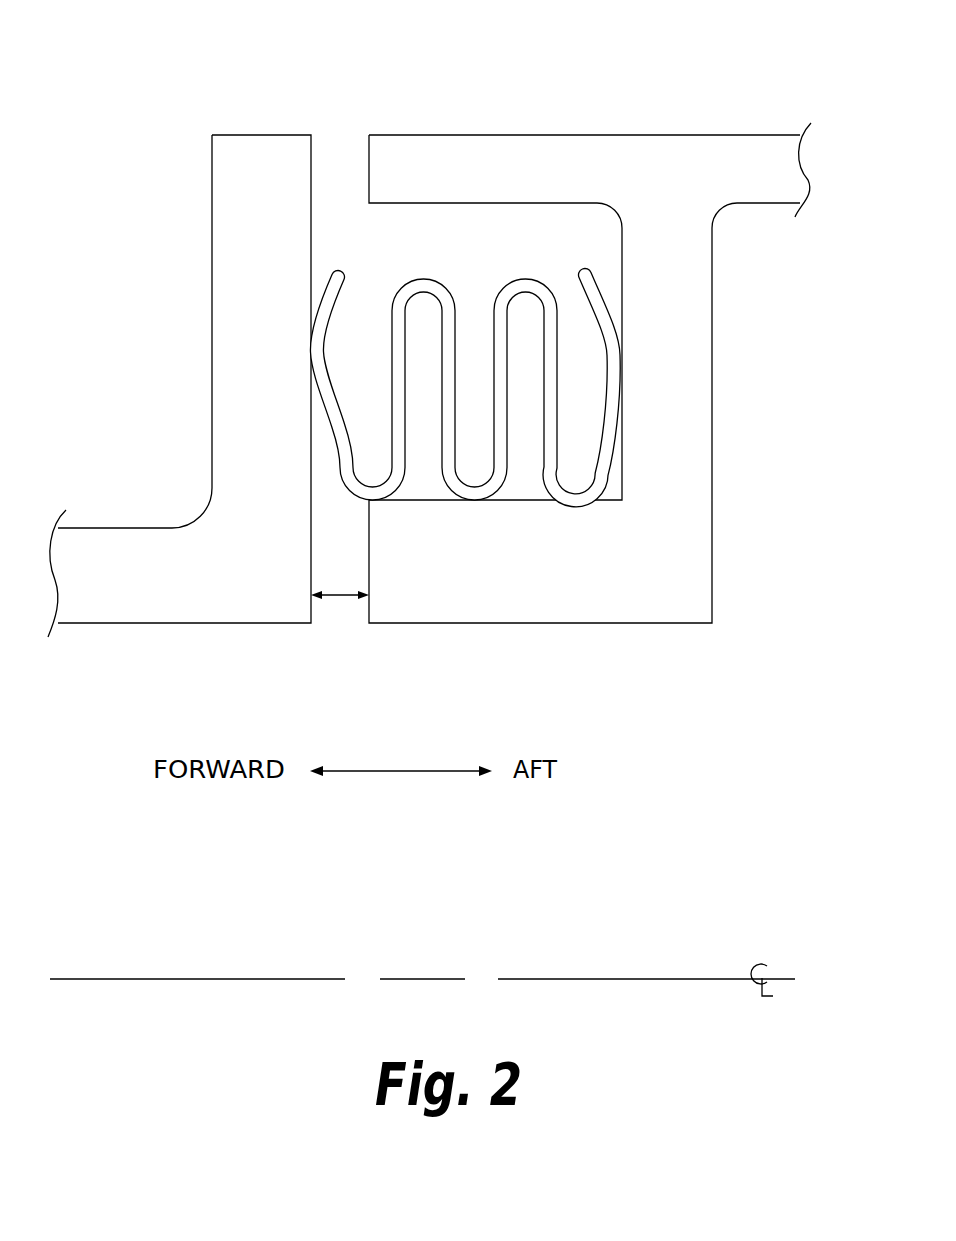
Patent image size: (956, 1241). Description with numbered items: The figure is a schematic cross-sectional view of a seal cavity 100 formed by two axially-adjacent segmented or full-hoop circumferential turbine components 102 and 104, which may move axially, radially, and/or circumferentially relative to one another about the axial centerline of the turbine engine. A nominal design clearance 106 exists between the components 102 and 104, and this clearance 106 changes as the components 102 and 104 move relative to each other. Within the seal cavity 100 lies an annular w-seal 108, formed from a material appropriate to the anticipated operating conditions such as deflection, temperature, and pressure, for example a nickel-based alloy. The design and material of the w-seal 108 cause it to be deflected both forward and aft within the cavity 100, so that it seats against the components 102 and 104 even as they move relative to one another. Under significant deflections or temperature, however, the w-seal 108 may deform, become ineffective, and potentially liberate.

The seal cavity 100 is at (429, 376).
The turbine component 102 is at (177, 624).
The turbine component 104 is at (540, 623).
The nominal design clearance 106 is at (339, 597).
The w-seal 108 is at (557, 350).